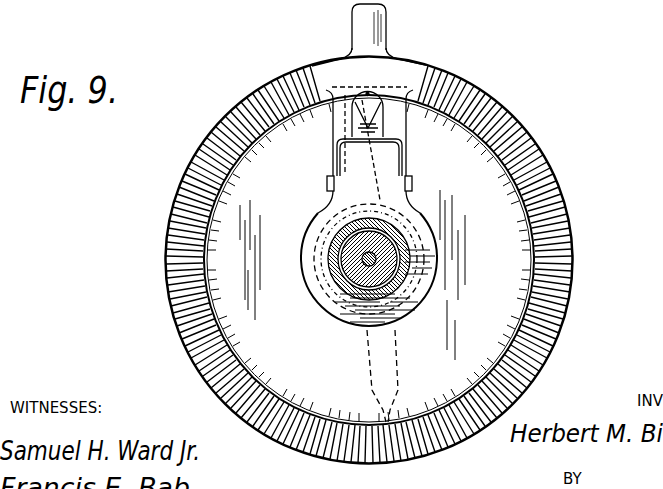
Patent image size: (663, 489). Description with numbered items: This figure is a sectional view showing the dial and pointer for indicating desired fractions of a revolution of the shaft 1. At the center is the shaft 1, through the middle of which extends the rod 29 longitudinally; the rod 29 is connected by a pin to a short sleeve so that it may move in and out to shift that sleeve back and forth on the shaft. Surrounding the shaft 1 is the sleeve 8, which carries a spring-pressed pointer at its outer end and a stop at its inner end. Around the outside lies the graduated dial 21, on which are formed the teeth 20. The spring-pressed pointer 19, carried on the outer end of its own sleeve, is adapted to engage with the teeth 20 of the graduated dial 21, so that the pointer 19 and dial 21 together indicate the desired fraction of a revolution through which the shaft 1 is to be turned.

The spring-pressed pointer 19 is at (380, 34).
The teeth 20 is at (425, 63).
The graduated dial 21 is at (488, 193).
The rod 29 is at (400, 252).
The shaft 1 is at (407, 276).
The sleeve 8 is at (342, 290).